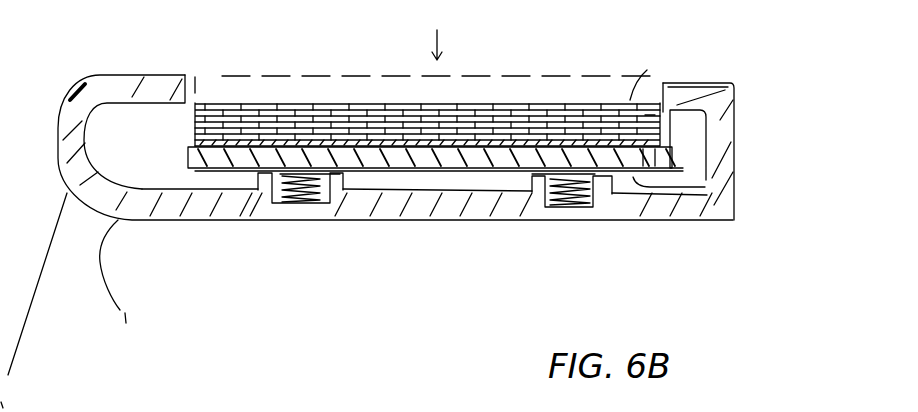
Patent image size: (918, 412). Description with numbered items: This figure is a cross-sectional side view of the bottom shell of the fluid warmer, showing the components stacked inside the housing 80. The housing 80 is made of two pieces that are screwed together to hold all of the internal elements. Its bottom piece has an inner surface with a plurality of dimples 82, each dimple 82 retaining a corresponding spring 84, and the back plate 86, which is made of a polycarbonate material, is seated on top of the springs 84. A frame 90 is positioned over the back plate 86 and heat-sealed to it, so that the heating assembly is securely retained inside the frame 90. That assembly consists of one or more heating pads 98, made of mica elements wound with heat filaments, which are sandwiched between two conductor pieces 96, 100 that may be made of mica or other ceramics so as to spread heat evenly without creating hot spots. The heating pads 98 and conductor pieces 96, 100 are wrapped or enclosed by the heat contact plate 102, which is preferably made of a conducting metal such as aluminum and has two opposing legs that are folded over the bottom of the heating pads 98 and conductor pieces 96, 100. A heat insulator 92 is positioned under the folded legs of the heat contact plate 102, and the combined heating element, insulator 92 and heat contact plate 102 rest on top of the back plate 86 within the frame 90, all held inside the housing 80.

The housing 80 is at (178, 220).
The dimple 82 is at (265, 220).
The spring 84 is at (297, 210).
The back plate 86 is at (447, 160).
The frame 90 is at (407, 147).
The heat insulator 92 is at (705, 187).
The conductor piece 96 is at (548, 130).
The heating pad 98 is at (371, 113).
The conductor piece 100 is at (718, 82).
The heat contact plate 102 is at (637, 100).